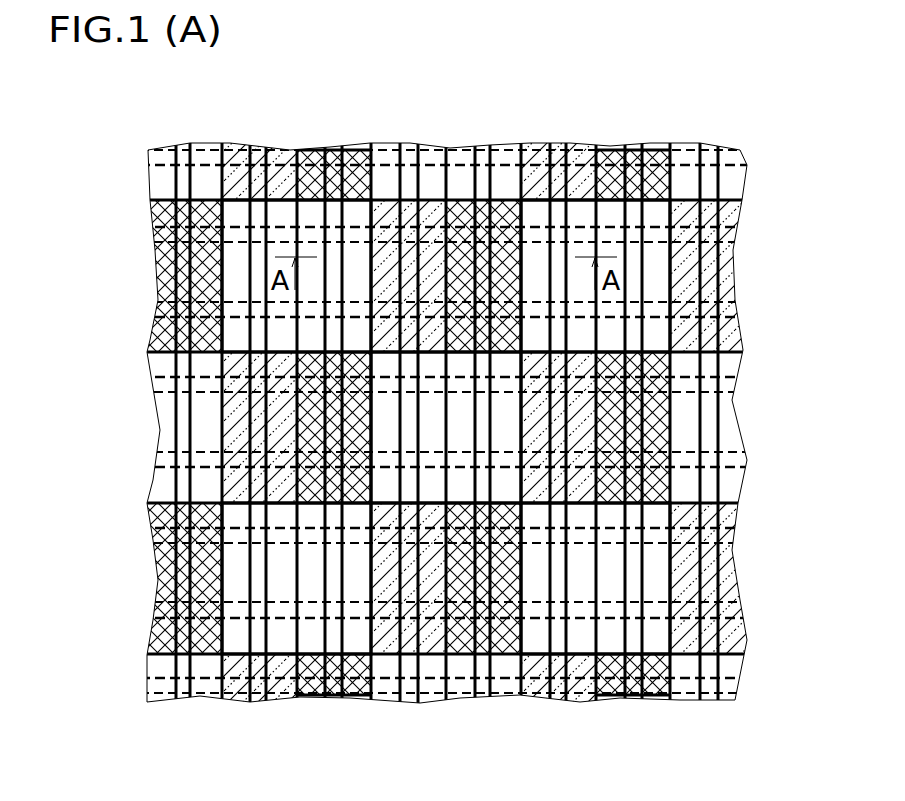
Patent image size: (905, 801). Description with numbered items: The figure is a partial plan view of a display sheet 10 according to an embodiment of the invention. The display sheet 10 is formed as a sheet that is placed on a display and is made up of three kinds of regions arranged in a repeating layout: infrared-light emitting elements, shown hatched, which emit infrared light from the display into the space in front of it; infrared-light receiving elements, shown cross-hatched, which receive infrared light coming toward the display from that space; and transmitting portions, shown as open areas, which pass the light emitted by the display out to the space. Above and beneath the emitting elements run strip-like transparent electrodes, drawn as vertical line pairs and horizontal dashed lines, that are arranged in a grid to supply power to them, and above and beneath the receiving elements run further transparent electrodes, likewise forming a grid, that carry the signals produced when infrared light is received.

The display sheet 10 is at (717, 52).